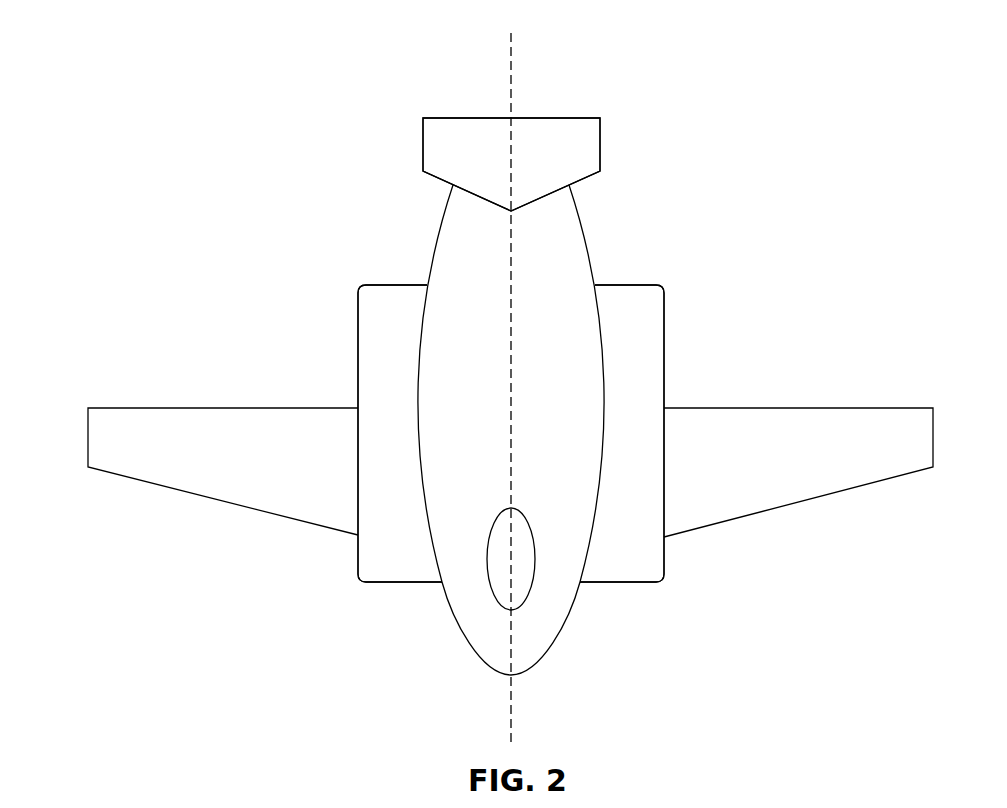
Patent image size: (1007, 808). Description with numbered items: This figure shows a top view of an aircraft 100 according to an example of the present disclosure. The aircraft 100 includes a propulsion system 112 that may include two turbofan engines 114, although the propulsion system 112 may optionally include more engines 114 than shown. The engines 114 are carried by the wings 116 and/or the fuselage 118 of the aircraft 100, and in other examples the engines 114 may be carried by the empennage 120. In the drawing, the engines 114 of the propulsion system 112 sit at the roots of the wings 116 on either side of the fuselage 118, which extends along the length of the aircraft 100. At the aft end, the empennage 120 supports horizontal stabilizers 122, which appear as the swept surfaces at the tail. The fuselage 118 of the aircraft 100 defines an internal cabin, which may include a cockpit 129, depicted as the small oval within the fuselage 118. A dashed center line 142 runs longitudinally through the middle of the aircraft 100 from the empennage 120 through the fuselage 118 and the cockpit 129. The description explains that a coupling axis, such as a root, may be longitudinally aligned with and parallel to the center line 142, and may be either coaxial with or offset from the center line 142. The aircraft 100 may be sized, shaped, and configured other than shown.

The aircraft 100 is at (118, 247).
The propulsion system 112 is at (398, 583).
The turbofan engines 114 is at (358, 568).
The wings 116 is at (175, 408).
The fuselage 118 is at (580, 265).
The empennage 120 is at (518, 118).
The horizontal stabilizers 122 is at (459, 137).
The cockpit 129 is at (502, 584).
The center line 142 is at (512, 52).